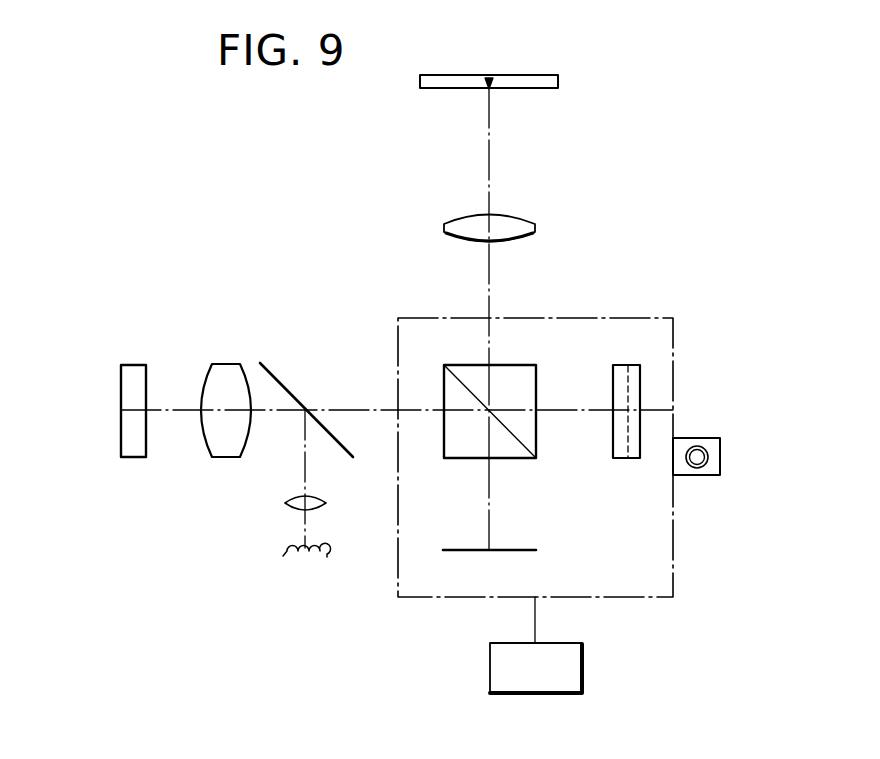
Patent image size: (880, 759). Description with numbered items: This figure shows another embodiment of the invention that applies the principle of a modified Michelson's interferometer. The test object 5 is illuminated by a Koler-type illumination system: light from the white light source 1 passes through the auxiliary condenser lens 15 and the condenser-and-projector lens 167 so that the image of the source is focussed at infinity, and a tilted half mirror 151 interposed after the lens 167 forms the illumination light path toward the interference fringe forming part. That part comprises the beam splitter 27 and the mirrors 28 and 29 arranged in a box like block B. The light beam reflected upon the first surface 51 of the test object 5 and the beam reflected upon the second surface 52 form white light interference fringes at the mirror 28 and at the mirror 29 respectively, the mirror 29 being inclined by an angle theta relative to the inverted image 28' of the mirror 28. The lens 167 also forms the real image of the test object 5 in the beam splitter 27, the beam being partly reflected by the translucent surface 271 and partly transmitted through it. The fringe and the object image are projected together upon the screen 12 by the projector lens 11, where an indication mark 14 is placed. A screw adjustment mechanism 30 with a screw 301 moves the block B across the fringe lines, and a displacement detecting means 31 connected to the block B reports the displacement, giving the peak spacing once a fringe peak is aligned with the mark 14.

The white light source 1 is at (283, 554).
The test object 5 is at (135, 372).
The first surface of the test object 51 is at (148, 387).
The second surface of the test object 52 is at (120, 388).
The projector lens 11 is at (535, 229).
The screen 12 is at (558, 82).
The indication mark 14 is at (489, 78).
The auxiliary condenser lens 15 is at (285, 503).
The tilted half mirror 151 is at (262, 365).
The condenser-and-projector lens 167 is at (225, 365).
The beam splitter 27 is at (456, 444).
The translucent surface of the beam splitter 271 is at (505, 421).
The mirror 28 is at (489, 523).
The inverted image of the mirror 28 28' is at (646, 446).
The mirror 29 is at (616, 438).
The screw adjustment mechanism 30 is at (785, 462).
The screw 301 is at (697, 464).
The displacement detecting means 31 is at (500, 672).
The box like block B is at (613, 598).